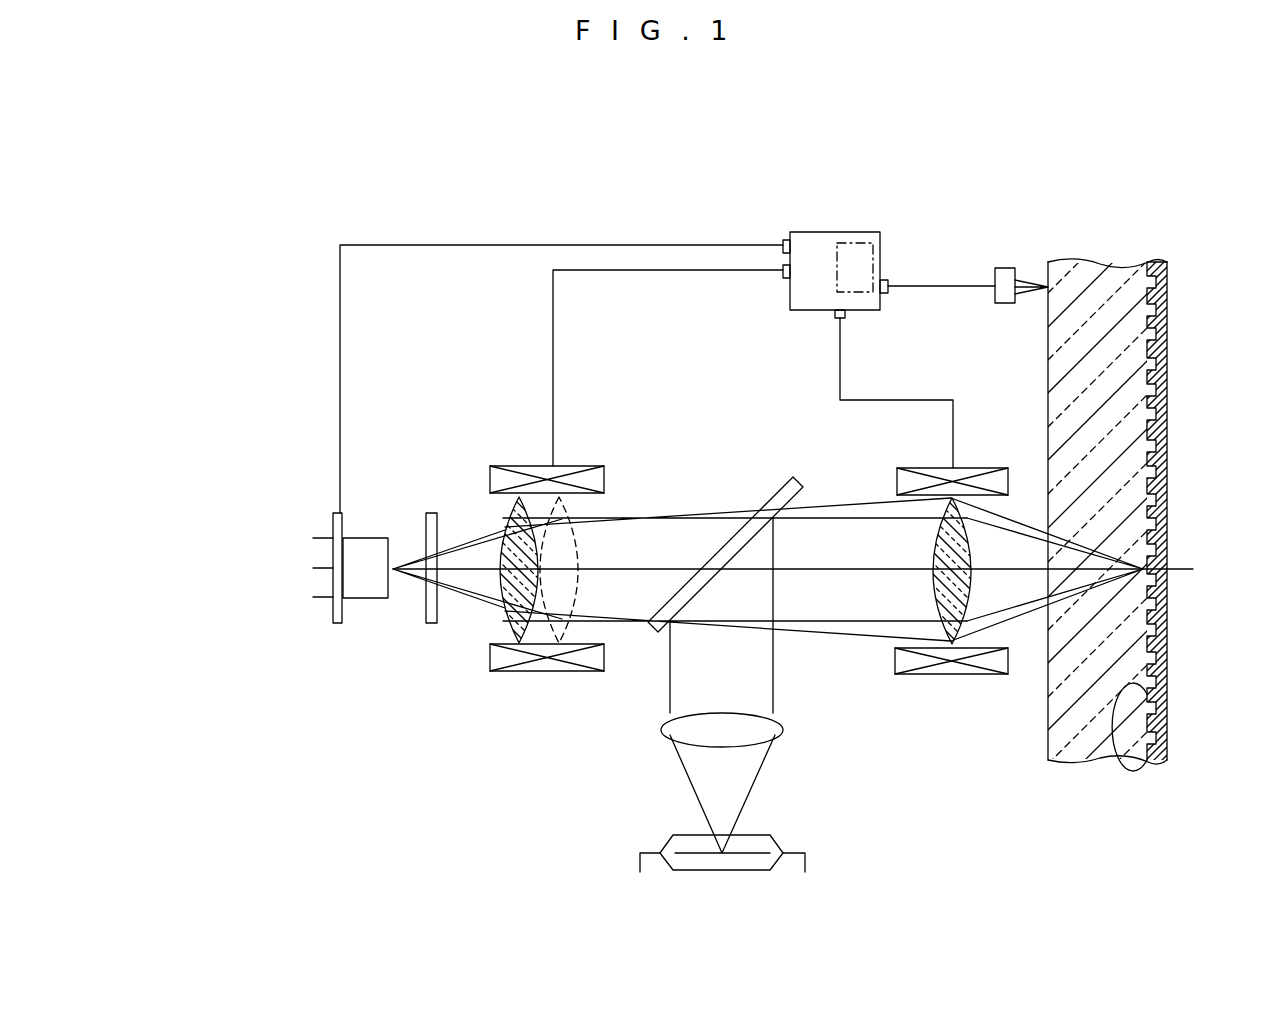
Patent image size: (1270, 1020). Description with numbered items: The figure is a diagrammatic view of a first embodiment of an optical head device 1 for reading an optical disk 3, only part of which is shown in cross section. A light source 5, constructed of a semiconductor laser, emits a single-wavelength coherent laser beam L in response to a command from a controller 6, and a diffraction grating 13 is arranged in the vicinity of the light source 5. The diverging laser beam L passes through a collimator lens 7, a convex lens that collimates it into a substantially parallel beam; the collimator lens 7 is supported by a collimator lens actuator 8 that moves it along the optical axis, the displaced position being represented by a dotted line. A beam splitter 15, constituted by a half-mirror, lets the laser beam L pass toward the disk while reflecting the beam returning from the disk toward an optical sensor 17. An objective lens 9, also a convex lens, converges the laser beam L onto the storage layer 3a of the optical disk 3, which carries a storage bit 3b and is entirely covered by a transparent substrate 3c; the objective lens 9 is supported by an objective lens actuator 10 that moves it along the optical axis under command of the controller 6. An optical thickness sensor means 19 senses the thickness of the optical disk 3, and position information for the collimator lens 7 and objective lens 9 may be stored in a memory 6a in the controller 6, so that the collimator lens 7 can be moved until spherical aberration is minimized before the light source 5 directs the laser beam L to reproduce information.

The optical head device 1 is at (308, 229).
The optical disk 3 is at (1112, 268).
The storage layer 3a is at (1160, 762).
The storage bit 3b is at (1120, 766).
The transparent substrate 3c is at (1055, 760).
The light source 5 is at (374, 601).
The controller 6 is at (810, 231).
The memory 6a is at (847, 244).
The collimator lens 7 is at (492, 508).
The collimator lens actuator 8 is at (592, 466).
The objective lens 9 is at (928, 553).
The objective lens actuator 10 is at (991, 468).
The diffraction grating 13 is at (432, 627).
The beam splitter 15 is at (650, 633).
The optical sensor 17 is at (767, 835).
The optical thickness sensor means 19 is at (1005, 268).
The laser beam L is at (455, 510).